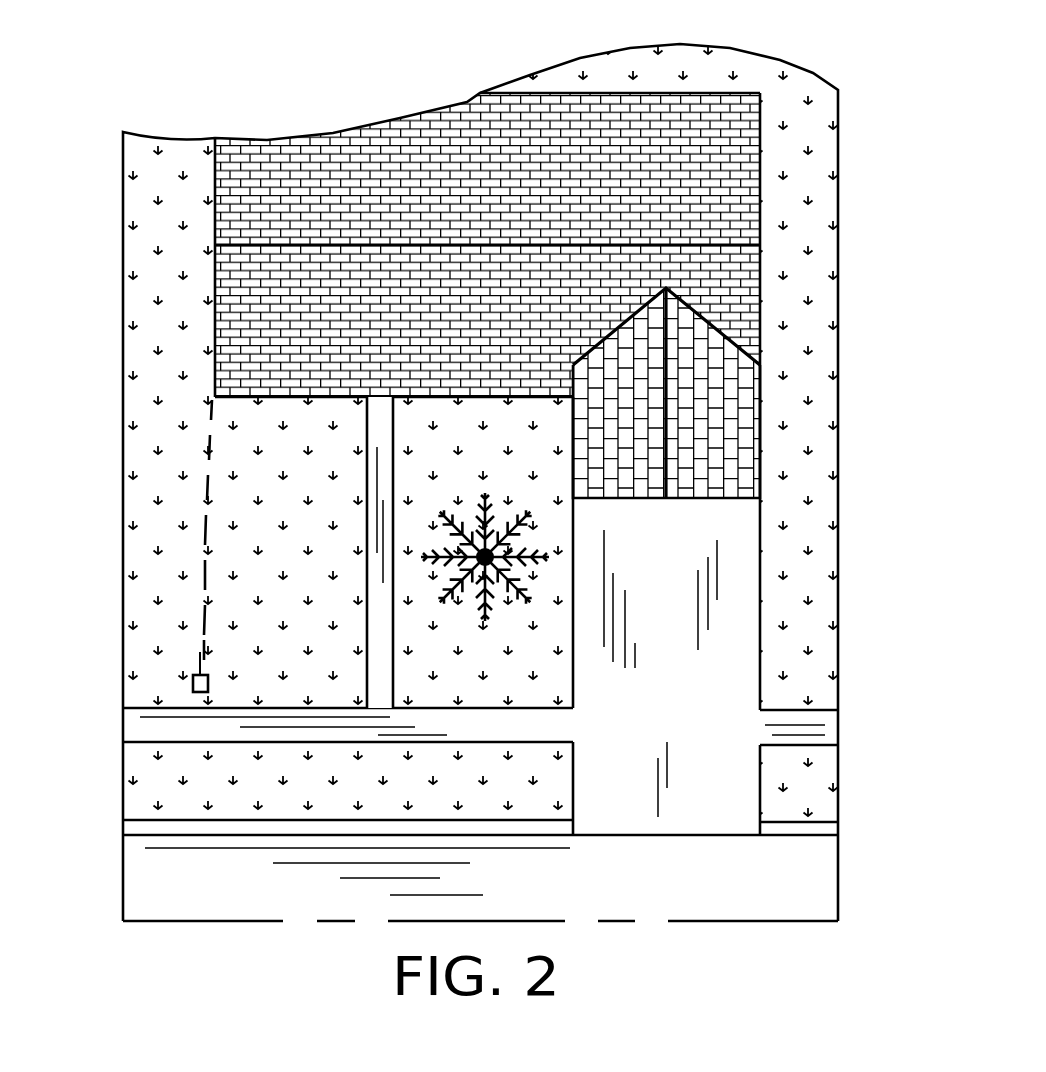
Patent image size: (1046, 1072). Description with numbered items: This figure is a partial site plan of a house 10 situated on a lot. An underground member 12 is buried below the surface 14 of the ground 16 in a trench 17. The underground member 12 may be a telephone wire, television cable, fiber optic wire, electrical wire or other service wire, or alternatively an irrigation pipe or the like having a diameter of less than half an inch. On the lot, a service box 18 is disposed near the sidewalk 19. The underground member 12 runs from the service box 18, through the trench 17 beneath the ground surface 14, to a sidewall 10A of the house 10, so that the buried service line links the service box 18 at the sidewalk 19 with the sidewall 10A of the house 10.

The house 10 is at (727, 293).
The sidewall 10A is at (212, 356).
The underground member 12 is at (205, 533).
The surface 14 is at (161, 482).
The ground 16 is at (161, 454).
The trench 17 is at (196, 614).
The service box 18 is at (192, 683).
The sidewalk 19 is at (138, 724).